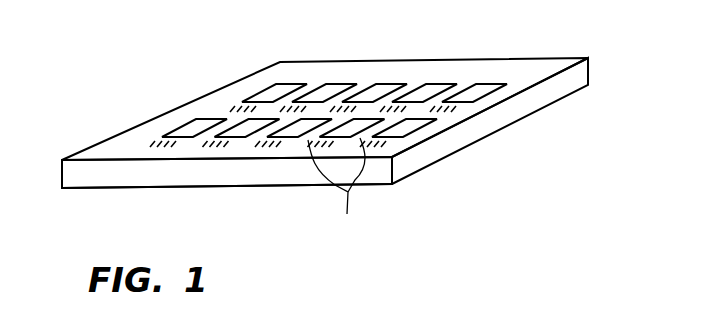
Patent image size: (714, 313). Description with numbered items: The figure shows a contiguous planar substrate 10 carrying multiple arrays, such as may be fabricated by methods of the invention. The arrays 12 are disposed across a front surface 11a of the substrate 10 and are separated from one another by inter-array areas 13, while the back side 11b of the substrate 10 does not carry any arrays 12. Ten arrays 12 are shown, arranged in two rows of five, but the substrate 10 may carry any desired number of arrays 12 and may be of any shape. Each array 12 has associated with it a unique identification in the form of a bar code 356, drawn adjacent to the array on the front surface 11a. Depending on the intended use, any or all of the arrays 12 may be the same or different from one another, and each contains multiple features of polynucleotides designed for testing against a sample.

The substrate 10 is at (468, 146).
The front surface 11a is at (550, 61).
The back side 11b is at (97, 189).
The array 12 is at (200, 128).
The inter-array area 13 is at (336, 189).
The bar code 356 is at (229, 110).